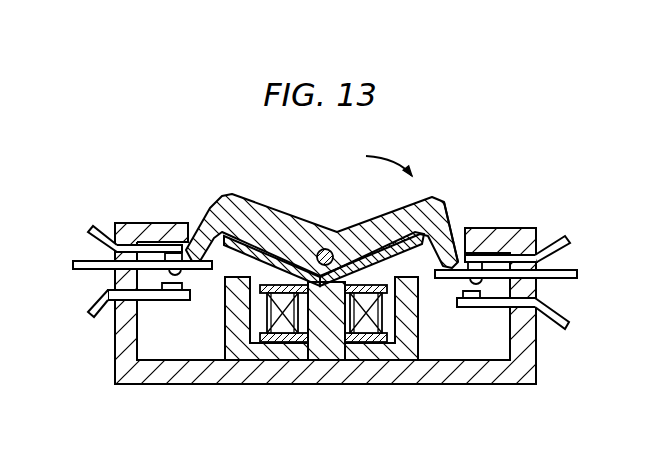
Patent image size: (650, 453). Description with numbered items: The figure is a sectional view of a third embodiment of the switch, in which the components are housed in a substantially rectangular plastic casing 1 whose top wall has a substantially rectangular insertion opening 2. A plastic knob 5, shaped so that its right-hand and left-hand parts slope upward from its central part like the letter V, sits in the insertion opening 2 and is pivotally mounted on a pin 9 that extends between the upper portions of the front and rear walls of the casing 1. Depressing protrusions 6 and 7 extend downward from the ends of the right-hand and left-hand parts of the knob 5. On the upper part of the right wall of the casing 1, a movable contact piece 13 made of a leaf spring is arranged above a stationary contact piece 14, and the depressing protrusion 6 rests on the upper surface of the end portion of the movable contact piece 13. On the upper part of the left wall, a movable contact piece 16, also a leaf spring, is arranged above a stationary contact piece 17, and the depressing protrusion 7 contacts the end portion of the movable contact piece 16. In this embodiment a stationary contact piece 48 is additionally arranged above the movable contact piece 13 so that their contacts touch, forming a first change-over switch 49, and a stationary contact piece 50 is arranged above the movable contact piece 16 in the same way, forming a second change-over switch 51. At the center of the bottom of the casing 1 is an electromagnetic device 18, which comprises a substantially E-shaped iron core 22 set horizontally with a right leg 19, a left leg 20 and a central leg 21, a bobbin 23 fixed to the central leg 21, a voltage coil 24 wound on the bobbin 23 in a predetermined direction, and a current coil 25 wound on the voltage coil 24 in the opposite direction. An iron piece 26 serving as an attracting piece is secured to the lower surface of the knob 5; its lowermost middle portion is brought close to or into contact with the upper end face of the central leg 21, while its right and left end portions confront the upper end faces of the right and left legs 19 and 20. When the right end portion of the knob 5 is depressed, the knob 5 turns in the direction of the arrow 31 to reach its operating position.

The casing 1 is at (302, 268).
The insertion opening 2 is at (146, 251).
The knob 5 is at (327, 215).
The depressing protrusion 6 is at (458, 240).
The depressing protrusion 7 is at (207, 228).
The pin 9 is at (328, 250).
The movable contact piece 13 is at (506, 267).
The stationary contact piece 14 is at (487, 308).
The movable contact piece 16 is at (120, 225).
The stationary contact piece 17 is at (148, 300).
The electromagnetic device 18 is at (334, 286).
The right leg 19 is at (422, 330).
The left leg 20 is at (242, 276).
The central leg 21 is at (324, 227).
The iron core 22 is at (323, 358).
The bobbin 23 is at (282, 286).
The voltage coil 24 is at (363, 363).
The current coil 25 is at (368, 330).
The iron piece 26 is at (356, 250).
The arrow 31 is at (386, 158).
The stationary contact piece 48 is at (489, 256).
The first change-over switch 49 is at (456, 284).
The stationary contact piece 50 is at (157, 245).
The second change-over switch 51 is at (192, 278).